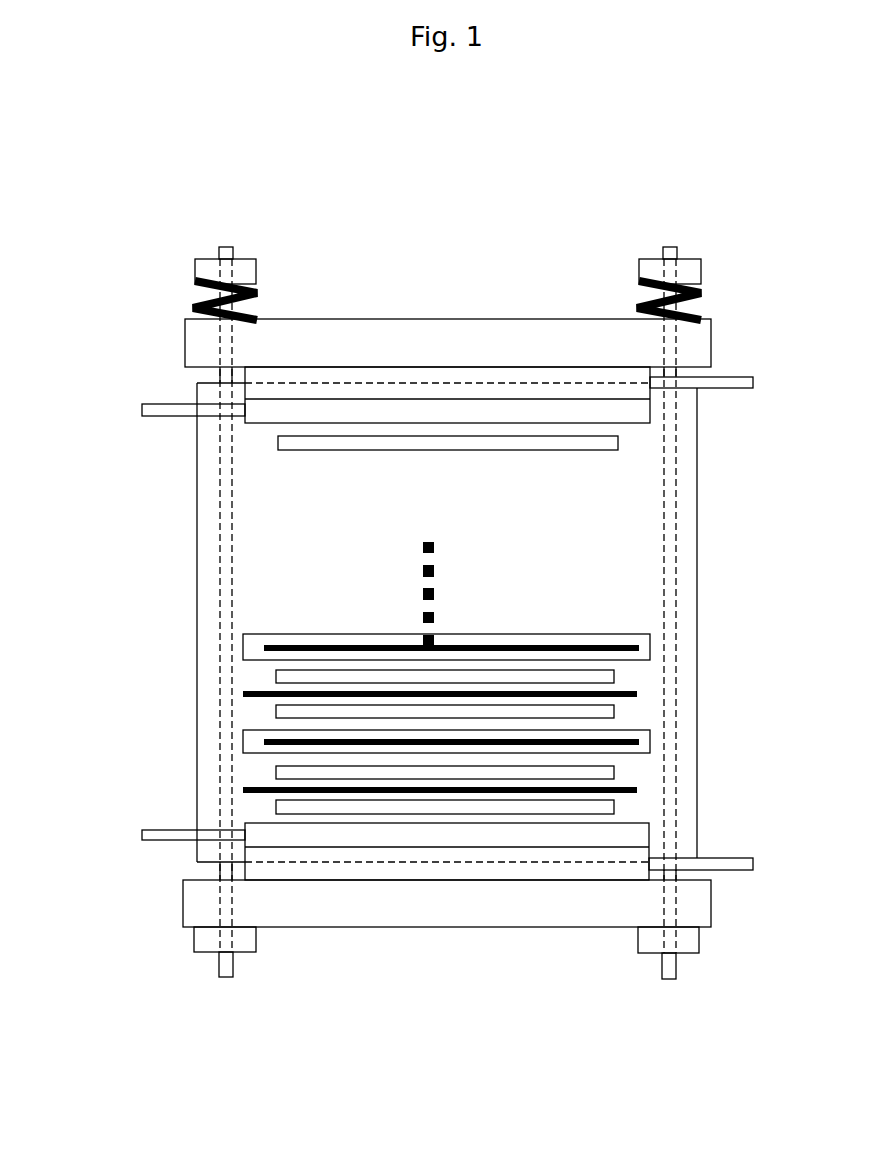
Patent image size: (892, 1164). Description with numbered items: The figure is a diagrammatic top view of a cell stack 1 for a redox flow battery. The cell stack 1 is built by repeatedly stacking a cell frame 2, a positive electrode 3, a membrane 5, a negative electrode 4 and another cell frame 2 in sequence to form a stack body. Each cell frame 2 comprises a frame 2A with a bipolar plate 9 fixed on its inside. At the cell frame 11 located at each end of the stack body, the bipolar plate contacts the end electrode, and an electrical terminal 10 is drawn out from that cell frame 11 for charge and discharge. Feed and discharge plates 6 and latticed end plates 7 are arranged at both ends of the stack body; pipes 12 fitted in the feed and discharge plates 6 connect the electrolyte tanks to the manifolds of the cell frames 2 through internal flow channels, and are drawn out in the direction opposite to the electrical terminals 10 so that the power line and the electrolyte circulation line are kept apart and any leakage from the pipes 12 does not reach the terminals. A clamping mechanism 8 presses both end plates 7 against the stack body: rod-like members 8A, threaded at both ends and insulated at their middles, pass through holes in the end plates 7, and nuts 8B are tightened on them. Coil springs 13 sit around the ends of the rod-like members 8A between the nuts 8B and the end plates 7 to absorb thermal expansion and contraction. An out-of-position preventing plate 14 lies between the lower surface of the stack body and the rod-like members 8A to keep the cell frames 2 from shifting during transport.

The cell stack 1 is at (417, 599).
The cell frame 2 is at (418, 724).
The frame 2A is at (245, 732).
The positive electrode 3 is at (603, 679).
The negative electrode 4 is at (603, 715).
The membrane 5 is at (243, 693).
The feed and discharge plate 6 is at (628, 392).
The end plate 7 is at (188, 348).
The clamping mechanism 8 is at (447, 599).
The rod-like member 8A is at (233, 253).
The nut 8B is at (245, 270).
The bipolar plate 9 is at (262, 745).
The electrical terminal 10 is at (142, 832).
The cell frame located at each end of the stack body 11 is at (263, 414).
The pipe 12 is at (745, 868).
The coil spring 13 is at (193, 303).
The out-of-position preventing plate 14 is at (690, 561).